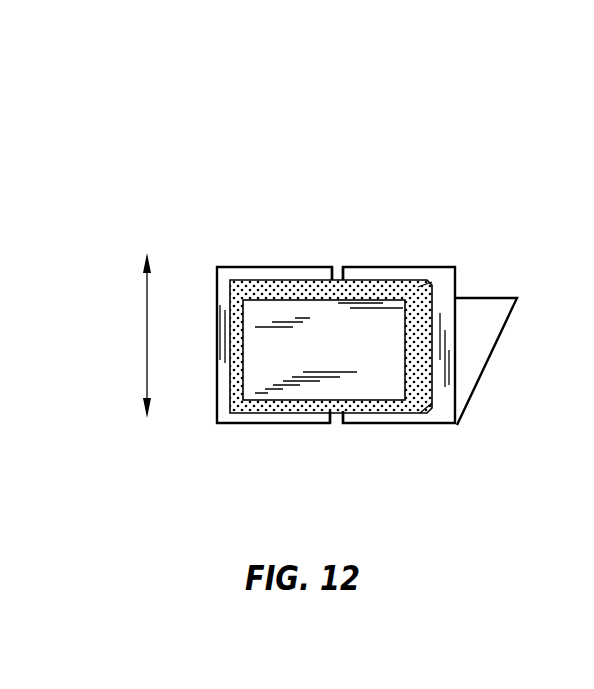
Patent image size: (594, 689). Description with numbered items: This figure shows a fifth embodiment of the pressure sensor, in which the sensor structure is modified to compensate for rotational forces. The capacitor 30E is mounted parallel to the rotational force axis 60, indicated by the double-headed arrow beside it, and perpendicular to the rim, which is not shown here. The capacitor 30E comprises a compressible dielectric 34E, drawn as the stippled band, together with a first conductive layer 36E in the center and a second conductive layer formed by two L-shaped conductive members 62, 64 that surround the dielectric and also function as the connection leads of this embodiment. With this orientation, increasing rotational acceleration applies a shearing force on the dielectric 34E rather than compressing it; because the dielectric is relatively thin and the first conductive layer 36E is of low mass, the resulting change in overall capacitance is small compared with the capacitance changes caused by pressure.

The capacitor 30E is at (393, 130).
The compressible dielectric 34E is at (397, 292).
The first conductive layer 36E is at (353, 355).
The rotational force axis 60 is at (147, 333).
The L-shaped conductive member 62 is at (358, 267).
The L-shaped conductive member 64 is at (298, 267).